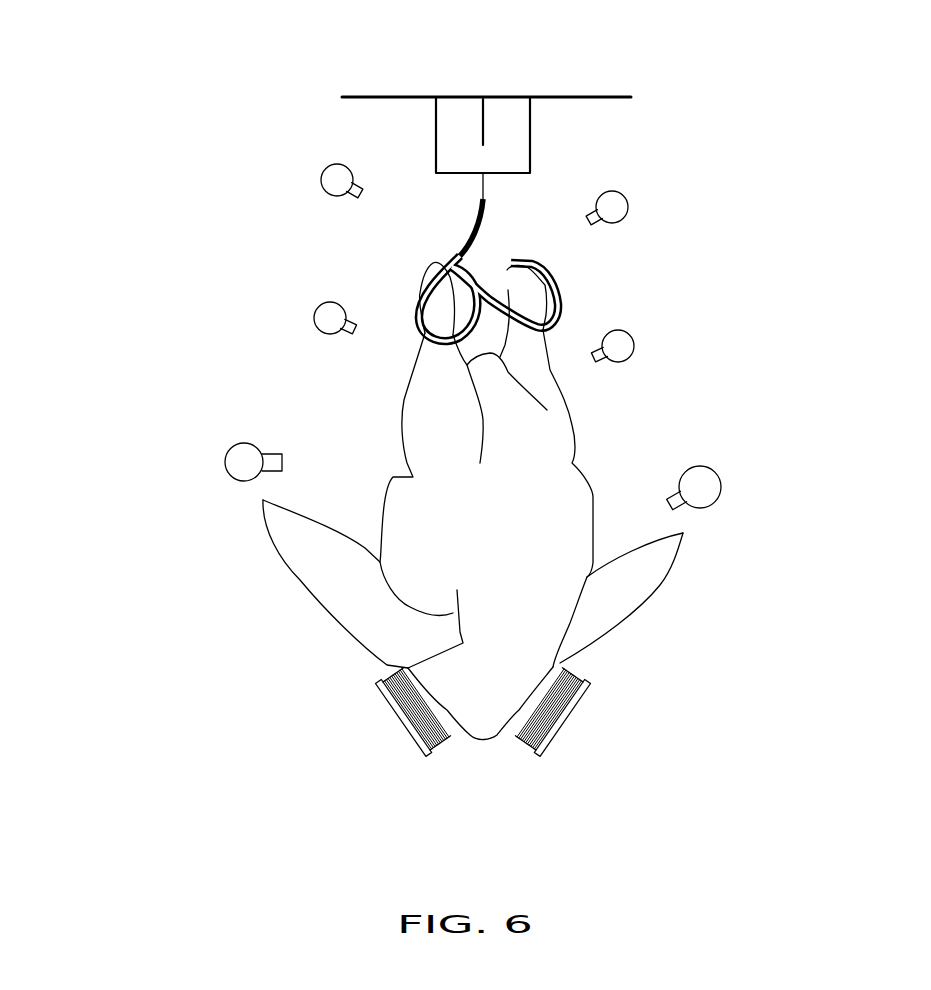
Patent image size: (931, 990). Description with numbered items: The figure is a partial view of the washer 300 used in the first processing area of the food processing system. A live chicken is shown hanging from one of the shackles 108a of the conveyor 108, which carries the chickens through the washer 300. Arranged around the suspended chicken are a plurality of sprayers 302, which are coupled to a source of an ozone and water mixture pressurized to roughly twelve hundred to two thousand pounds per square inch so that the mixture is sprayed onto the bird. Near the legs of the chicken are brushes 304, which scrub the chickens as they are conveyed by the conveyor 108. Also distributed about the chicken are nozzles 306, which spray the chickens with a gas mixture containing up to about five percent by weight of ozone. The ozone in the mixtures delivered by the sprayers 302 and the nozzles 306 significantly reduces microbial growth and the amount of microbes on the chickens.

The washer 300 is at (196, 162).
The conveyor 108 is at (541, 97).
The shackles 108a is at (474, 253).
The sprayers 302 is at (318, 172).
The brushes 304 is at (407, 727).
The nozzles 306 is at (630, 216).